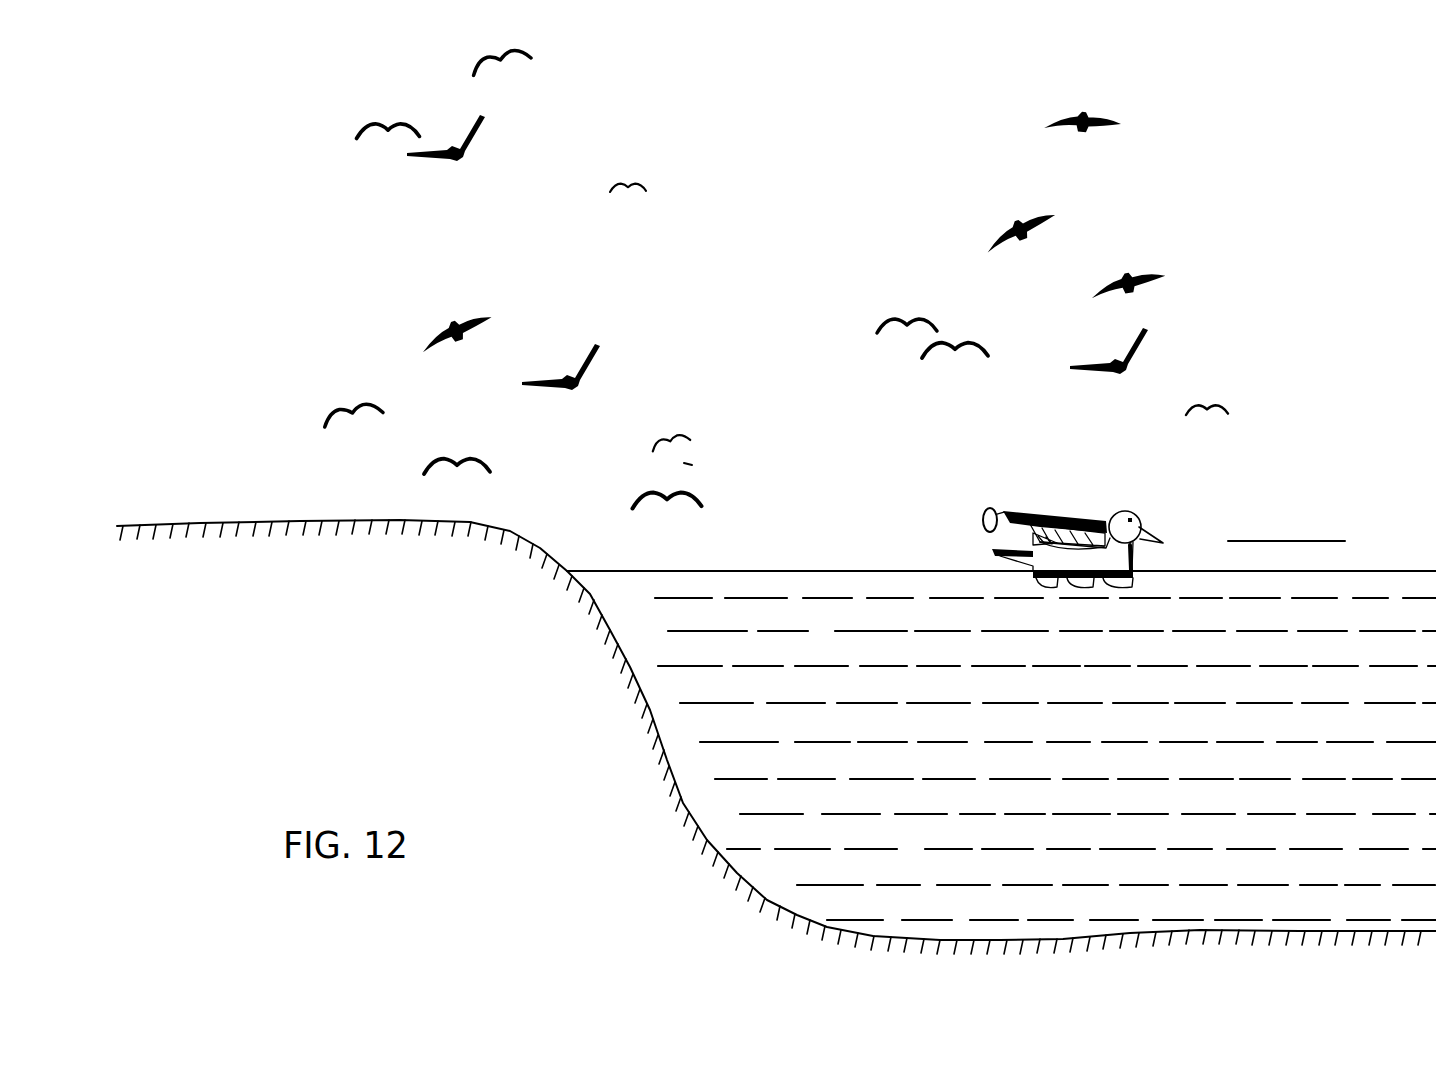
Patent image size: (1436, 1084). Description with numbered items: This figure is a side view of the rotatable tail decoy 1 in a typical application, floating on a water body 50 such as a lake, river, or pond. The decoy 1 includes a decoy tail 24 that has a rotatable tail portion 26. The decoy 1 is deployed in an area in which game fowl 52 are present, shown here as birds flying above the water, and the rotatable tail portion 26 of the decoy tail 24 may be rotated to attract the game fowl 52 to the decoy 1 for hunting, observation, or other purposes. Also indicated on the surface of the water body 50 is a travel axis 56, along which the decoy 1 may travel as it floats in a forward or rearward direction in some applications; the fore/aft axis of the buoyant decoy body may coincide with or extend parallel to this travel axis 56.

The rotatable tail decoy 1 is at (1055, 504).
The decoy tail 24 is at (1018, 500).
The rotatable tail portion 26 is at (1007, 508).
The water body 50 is at (822, 570).
The game fowl 52 is at (548, 376).
The travel axis 56 is at (1306, 540).